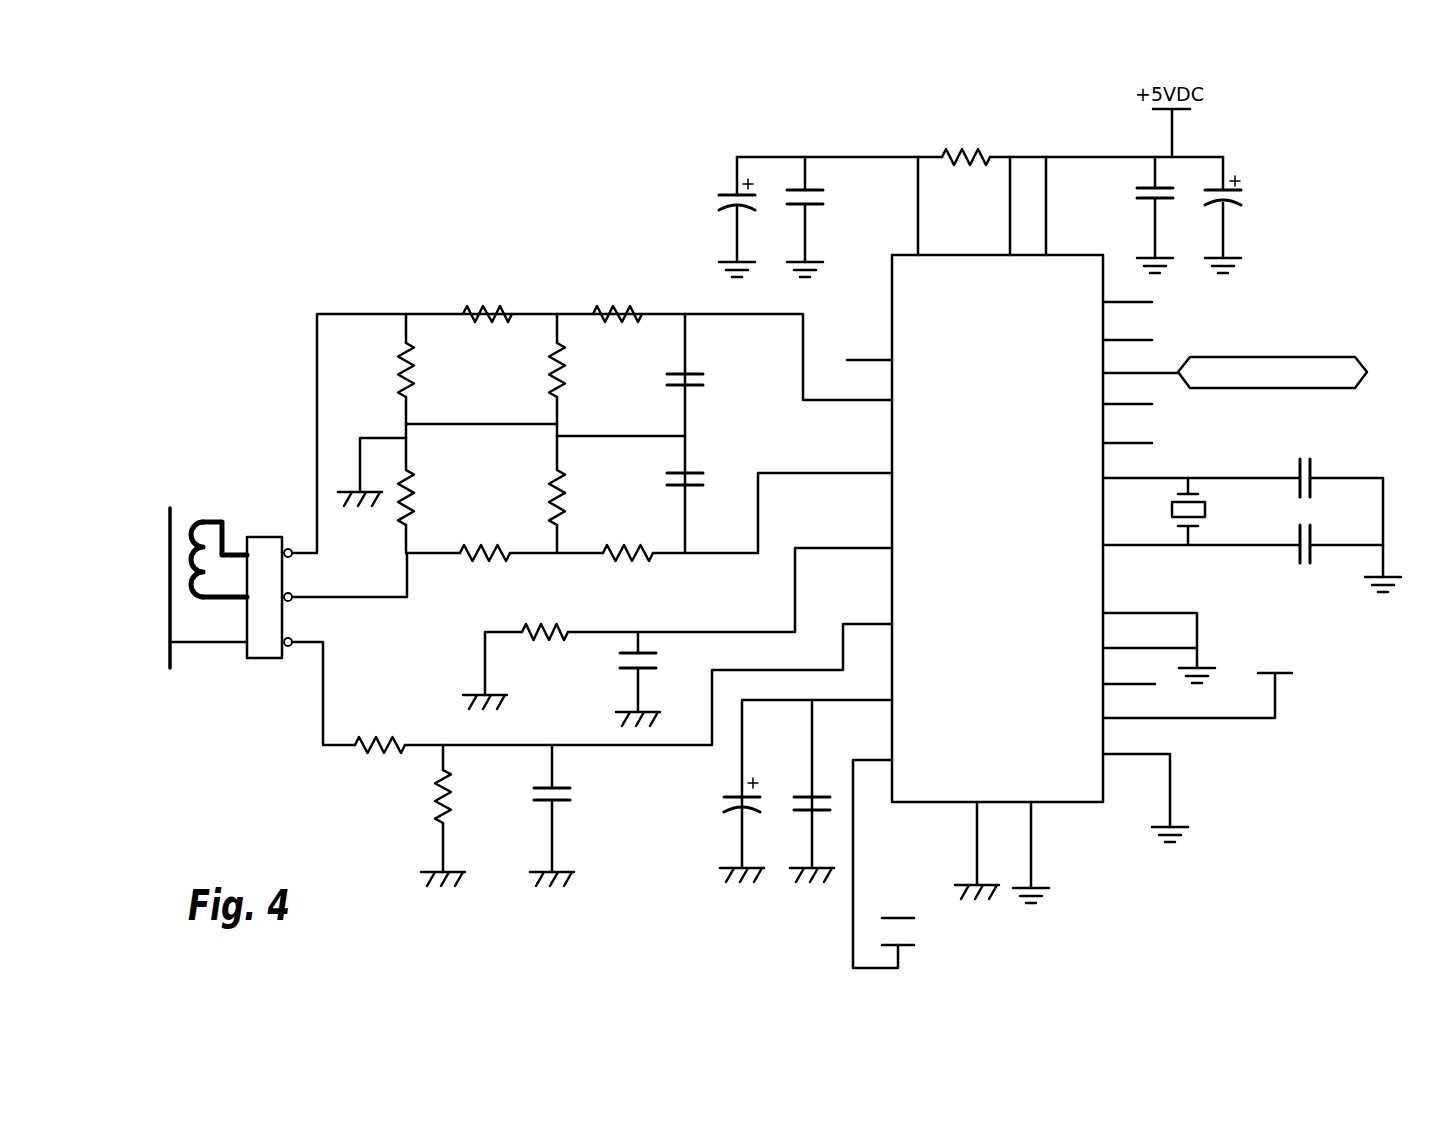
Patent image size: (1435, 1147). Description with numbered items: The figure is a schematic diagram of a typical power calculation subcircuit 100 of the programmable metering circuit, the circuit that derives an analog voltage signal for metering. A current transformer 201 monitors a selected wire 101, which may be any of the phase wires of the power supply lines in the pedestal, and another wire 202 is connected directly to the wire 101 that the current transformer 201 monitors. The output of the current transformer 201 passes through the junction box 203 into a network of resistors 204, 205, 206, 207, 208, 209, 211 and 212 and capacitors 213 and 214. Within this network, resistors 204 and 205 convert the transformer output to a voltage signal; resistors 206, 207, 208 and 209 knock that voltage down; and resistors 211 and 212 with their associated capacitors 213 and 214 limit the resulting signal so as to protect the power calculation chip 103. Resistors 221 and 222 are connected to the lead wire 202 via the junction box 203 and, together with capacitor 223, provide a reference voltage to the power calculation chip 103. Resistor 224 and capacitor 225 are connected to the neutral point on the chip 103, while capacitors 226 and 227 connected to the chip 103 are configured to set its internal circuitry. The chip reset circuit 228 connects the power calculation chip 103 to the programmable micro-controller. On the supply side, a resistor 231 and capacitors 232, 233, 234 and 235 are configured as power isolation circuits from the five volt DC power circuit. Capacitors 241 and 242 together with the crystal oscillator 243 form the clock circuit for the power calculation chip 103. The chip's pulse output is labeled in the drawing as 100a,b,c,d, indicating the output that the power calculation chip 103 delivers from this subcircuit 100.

The power calculation subcircuit 100 is at (333, 272).
The selected wire 101 is at (170, 535).
The current transformer 201 is at (197, 521).
The wire 202 is at (203, 646).
The junction box 203 is at (263, 660).
The resistor 204 is at (415, 369).
The resistor 205 is at (416, 498).
The resistor 206 is at (483, 301).
The resistor 207 is at (566, 360).
The resistor 208 is at (497, 565).
The resistor 209 is at (566, 500).
The resistor 211 is at (612, 301).
The resistor 212 is at (633, 565).
The capacitor 213 is at (699, 375).
The capacitor 214 is at (698, 475).
The resistor 221 is at (387, 738).
The resistor 222 is at (432, 806).
The capacitor 223 is at (537, 802).
The resistor 224 is at (524, 642).
The capacitor 225 is at (656, 667).
The capacitor 226 is at (729, 801).
The capacitor 227 is at (801, 800).
The chip reset circuit 228 is at (900, 915).
The resistor 231 is at (957, 151).
The capacitor 232 is at (724, 198).
The capacitor 233 is at (820, 195).
The capacitor 234 is at (1238, 203).
The capacitor 235 is at (1142, 201).
The capacitor 241 is at (1313, 468).
The capacitor 242 is at (1301, 565).
The crystal oscillator 243 is at (1208, 508).
The power calculation chip 103 is at (1055, 803).
The pulse output 100a,b,c,d is at (1262, 356).